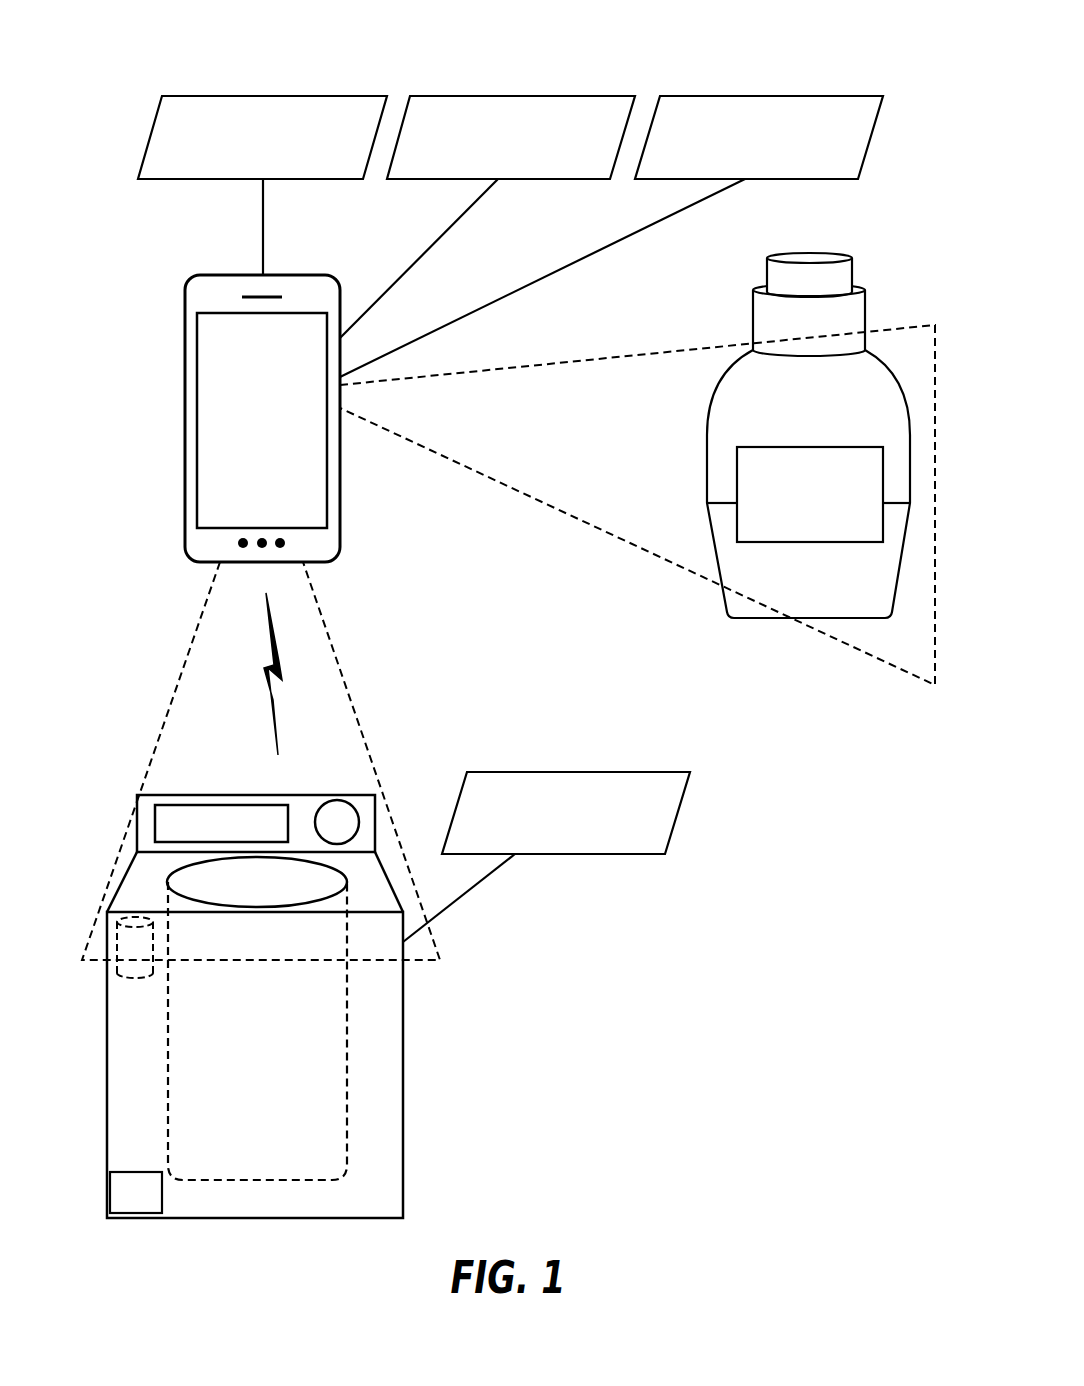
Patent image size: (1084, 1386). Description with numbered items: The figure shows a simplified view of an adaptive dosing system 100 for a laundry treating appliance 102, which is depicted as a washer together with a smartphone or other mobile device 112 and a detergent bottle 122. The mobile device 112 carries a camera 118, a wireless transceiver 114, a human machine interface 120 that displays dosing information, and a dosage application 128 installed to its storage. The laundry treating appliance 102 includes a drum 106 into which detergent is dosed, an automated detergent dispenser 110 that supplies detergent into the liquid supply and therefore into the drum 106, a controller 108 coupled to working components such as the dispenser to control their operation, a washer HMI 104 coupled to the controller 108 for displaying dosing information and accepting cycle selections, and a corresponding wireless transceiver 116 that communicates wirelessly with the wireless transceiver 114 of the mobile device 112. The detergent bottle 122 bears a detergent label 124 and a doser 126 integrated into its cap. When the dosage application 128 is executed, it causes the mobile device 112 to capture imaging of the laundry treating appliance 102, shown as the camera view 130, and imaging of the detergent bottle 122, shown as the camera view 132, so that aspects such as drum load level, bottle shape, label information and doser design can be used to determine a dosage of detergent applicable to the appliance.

The adaptive dosing system 100 is at (168, 38).
The laundry treating appliance 102 is at (280, 1006).
The washer HMI 104 is at (204, 836).
The drum 106 is at (242, 1066).
The controller 108 is at (153, 1202).
The automated detergent dispenser 110 is at (118, 942).
The mobile device 112 is at (311, 433).
The wireless transceiver 114 is at (492, 166).
The wireless transceiver 116 is at (547, 842).
The camera 118 is at (244, 166).
The human machine interface 120 is at (242, 432).
The detergent bottle 122 is at (782, 429).
The detergent label 124 is at (737, 460).
The doser 126 is at (852, 273).
The dosage application 128 is at (742, 166).
The camera view 130 is at (437, 427).
The camera view 132 is at (221, 766).